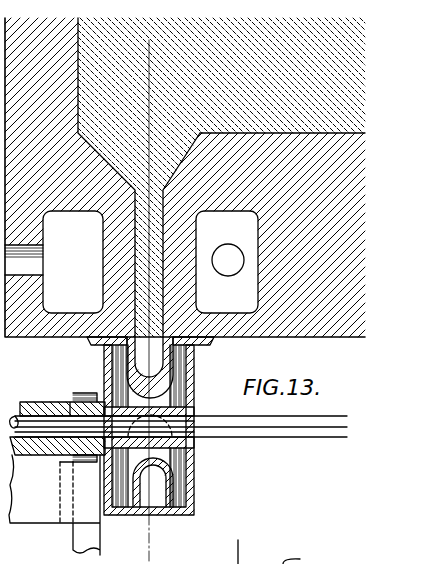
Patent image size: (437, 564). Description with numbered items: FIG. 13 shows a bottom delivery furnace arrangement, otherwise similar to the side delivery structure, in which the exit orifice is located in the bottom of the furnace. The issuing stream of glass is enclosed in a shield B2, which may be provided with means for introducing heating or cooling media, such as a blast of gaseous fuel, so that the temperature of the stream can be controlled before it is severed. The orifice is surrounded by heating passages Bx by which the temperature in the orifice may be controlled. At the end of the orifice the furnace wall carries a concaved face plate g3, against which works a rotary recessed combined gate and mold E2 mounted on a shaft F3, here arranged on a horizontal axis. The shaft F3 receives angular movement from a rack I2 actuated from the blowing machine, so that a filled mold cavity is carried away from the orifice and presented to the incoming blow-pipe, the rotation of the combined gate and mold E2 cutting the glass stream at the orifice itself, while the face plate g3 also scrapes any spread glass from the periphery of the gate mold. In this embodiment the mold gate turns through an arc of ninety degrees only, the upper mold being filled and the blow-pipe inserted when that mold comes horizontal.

The shield B2 is at (104, 343).
The heating passages Bx is at (236, 300).
The concaved face plate g3 is at (207, 347).
The shaft F3 is at (182, 420).
The rotary recessed combined gate and mold E2 is at (180, 478).
The rack I2 is at (87, 538).